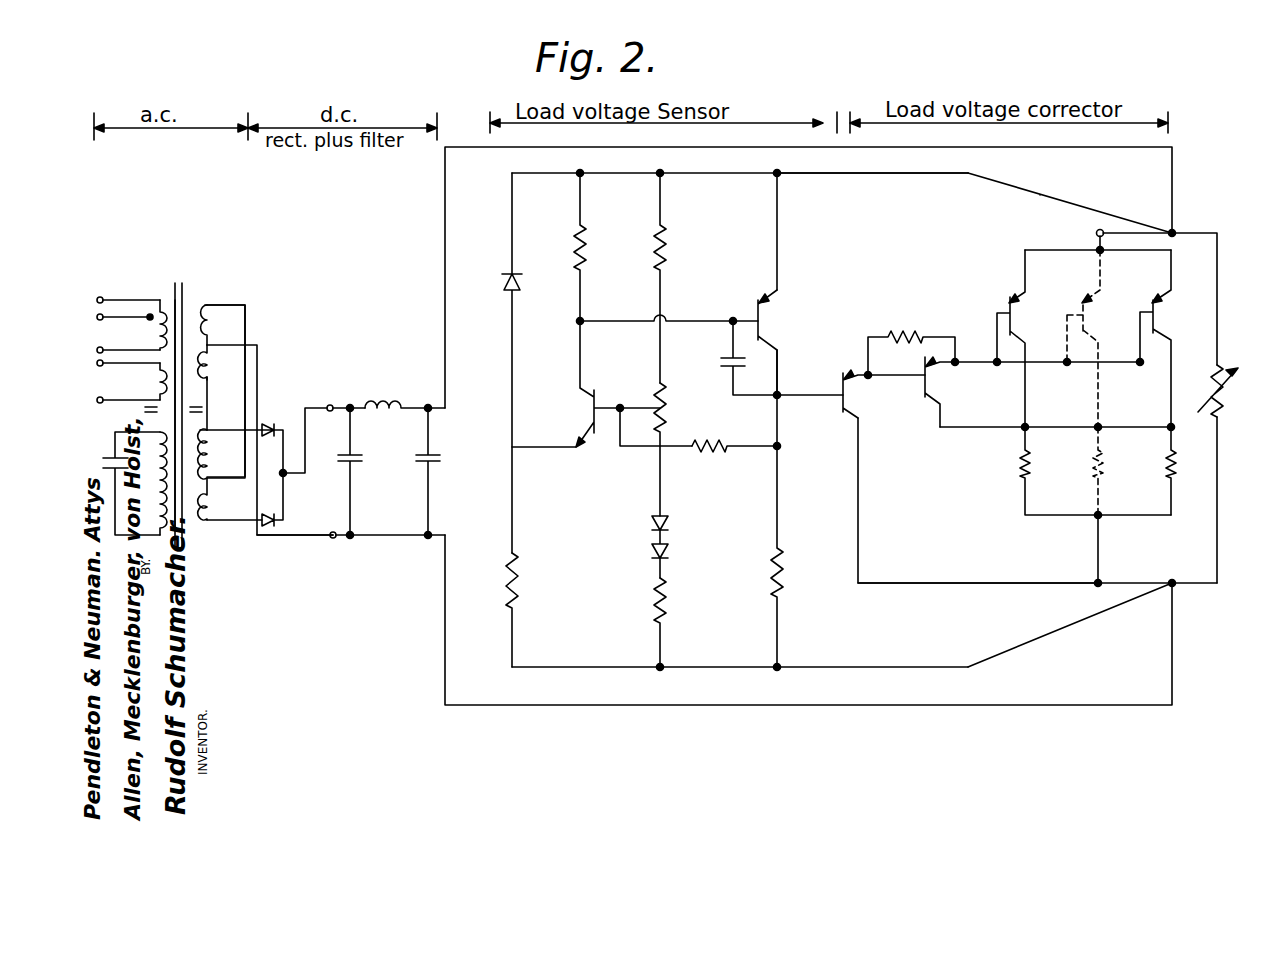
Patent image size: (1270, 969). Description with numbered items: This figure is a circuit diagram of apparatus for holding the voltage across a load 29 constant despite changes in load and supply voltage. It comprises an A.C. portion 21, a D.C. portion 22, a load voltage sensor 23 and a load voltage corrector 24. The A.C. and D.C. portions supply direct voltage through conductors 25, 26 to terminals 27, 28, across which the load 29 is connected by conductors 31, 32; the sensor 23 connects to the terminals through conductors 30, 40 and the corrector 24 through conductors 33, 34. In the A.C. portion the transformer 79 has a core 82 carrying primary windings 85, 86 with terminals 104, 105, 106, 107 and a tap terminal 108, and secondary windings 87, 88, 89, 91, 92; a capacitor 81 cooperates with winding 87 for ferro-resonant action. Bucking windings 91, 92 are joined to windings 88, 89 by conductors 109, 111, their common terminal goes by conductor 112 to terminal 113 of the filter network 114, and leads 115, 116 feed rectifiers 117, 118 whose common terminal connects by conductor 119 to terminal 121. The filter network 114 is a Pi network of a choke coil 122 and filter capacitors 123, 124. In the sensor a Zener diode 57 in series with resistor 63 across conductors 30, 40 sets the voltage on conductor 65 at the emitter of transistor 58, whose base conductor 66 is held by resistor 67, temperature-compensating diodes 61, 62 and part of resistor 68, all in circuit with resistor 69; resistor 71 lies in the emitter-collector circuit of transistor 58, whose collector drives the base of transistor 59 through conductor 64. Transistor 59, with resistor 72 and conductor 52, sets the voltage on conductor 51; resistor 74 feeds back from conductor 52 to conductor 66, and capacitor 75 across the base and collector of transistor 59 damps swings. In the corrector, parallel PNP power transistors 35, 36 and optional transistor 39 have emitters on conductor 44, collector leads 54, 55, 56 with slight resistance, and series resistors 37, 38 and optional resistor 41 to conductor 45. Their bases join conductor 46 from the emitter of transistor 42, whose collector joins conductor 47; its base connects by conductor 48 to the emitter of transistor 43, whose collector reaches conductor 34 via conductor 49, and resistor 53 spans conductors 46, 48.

The A.C. portion 21 is at (178, 283).
The D.C. portion 22 is at (349, 303).
The load voltage sensor 23 is at (630, 150).
The load voltage corrector 24 is at (1045, 152).
The conductor 25 is at (793, 158).
The conductor 26 is at (800, 706).
The terminal 27 is at (1175, 230).
The terminal 28 is at (1175, 586).
The load 29 is at (1220, 420).
The conductor 30 is at (850, 175).
The conductor 31 is at (1217, 335).
The conductor 32 is at (1217, 515).
The conductor 33 is at (1096, 230).
The conductor 34 is at (1098, 586).
The transistor 35 is at (1000, 308).
The transistor 36 is at (1198, 304).
The resistor 37 is at (1020, 462).
The resistor 38 is at (1176, 462).
The transistor 39 is at (1120, 308).
The conductor 40 is at (865, 667).
The resistor 41 is at (1103, 470).
The transistor 42 is at (960, 386).
The transistor 43 is at (834, 428).
The conductor 44 is at (1096, 250).
The conductor 45 is at (1100, 555).
The conductor 46 is at (990, 364).
The conductor 47 is at (960, 428).
The conductor 48 is at (890, 376).
The conductor 49 is at (858, 525).
The conductor 51 is at (800, 395).
The conductor 52 is at (780, 350).
The resistor 53 is at (905, 337).
The conductor 54 is at (1027, 275).
The conductor 55 is at (1172, 270).
The conductor 56 is at (1100, 270).
The Zener diode 57 is at (505, 290).
The transistor 58 is at (612, 376).
The transistor 59 is at (760, 295).
The diode 61 is at (668, 524).
The diode 62 is at (668, 552).
The resistor 63 is at (518, 580).
The conductor 64 is at (615, 321).
The conductor 65 is at (550, 448).
The conductor 66 is at (626, 408).
The resistor 67 is at (668, 600).
The resistor 68 is at (668, 412).
The resistor 69 is at (668, 250).
The resistor 71 is at (588, 250).
The resistor 72 is at (785, 575).
The resistor 74 is at (710, 452).
The capacitor 75 is at (725, 362).
The transformer 79 is at (223, 290).
The capacitor 81 is at (110, 466).
The core 82 is at (173, 291).
The primary winding 85 is at (155, 382).
The primary winding 86 is at (155, 320).
The secondary winding 87 is at (152, 468).
The secondary winding 88 is at (207, 506).
The secondary winding 89 is at (207, 466).
The secondary winding 91 is at (207, 365).
The secondary winding 92 is at (207, 322).
The terminal 104 is at (98, 403).
The terminal 105 is at (98, 366).
The terminal 106 is at (98, 347).
The terminal 107 is at (98, 297).
The terminal 108 is at (111, 315).
The conductor 109 is at (208, 400).
The conductor 111 is at (247, 335).
The conductor 112 is at (258, 365).
The terminal 113 is at (333, 538).
The filter network 114 is at (382, 388).
The lead 115 is at (225, 522).
The lead 116 is at (225, 430).
The rectifier 117 is at (276, 524).
The rectifier 118 is at (268, 422).
The conductor 119 is at (290, 476).
The terminal 121 is at (330, 404).
The choke coil 122 is at (385, 412).
The filter capacitor 123 is at (352, 460).
The filter capacitor 124 is at (430, 462).